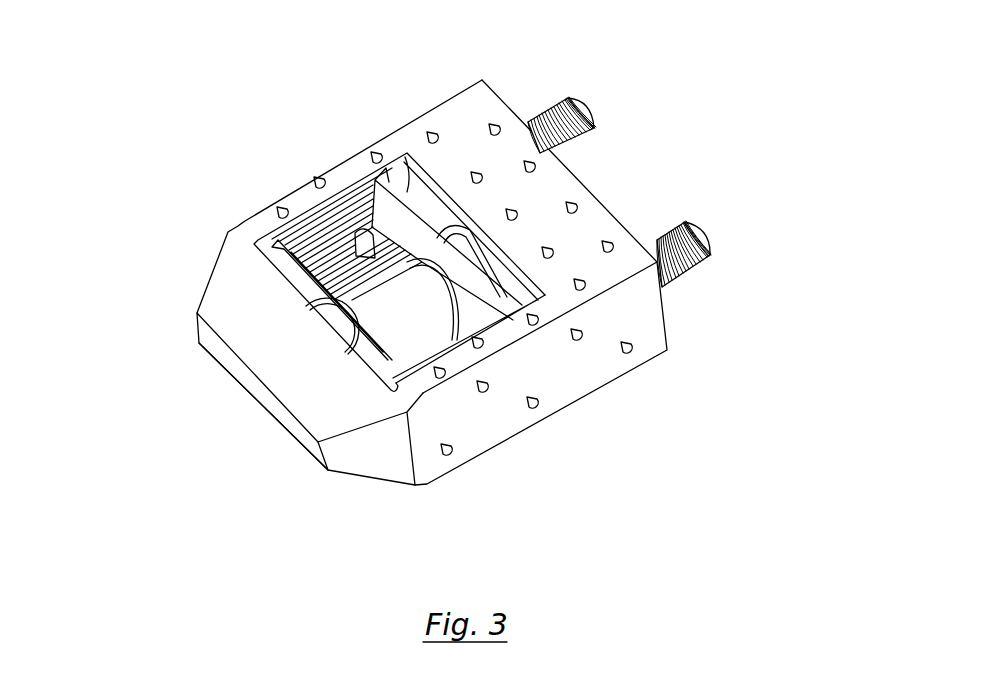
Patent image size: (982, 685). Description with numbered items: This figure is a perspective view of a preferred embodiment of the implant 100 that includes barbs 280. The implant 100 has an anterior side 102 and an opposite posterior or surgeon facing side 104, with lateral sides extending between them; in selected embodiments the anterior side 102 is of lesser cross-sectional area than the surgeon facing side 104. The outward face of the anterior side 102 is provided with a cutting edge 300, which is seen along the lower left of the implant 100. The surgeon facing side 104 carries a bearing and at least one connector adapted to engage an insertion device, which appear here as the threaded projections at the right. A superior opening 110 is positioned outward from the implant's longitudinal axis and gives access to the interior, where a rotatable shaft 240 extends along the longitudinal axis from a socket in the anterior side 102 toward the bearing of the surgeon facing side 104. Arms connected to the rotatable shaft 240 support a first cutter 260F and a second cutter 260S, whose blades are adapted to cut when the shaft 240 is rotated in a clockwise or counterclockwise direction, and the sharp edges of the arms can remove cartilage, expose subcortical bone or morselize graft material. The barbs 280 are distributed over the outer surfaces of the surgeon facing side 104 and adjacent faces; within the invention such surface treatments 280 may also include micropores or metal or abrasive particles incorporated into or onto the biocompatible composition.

The implant 100 is at (305, 93).
The anterior side 102 is at (225, 401).
The surgeon facing side 104 is at (613, 183).
The superior opening 110 is at (518, 293).
The rotatable shaft 240 is at (422, 322).
The first cutter 260F is at (323, 223).
The second cutter 260S is at (440, 355).
The barbs 280 is at (490, 126).
The cutting edge 300 is at (283, 460).